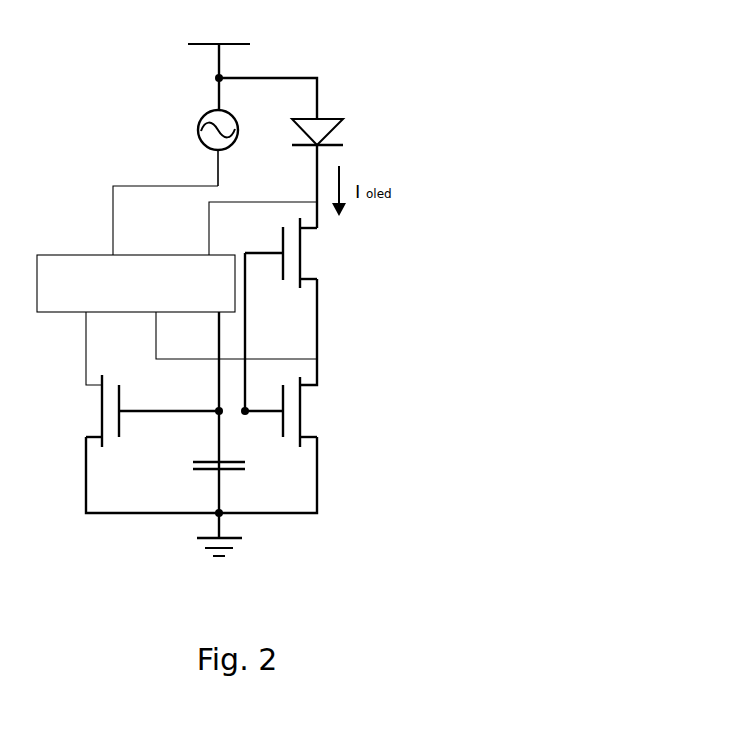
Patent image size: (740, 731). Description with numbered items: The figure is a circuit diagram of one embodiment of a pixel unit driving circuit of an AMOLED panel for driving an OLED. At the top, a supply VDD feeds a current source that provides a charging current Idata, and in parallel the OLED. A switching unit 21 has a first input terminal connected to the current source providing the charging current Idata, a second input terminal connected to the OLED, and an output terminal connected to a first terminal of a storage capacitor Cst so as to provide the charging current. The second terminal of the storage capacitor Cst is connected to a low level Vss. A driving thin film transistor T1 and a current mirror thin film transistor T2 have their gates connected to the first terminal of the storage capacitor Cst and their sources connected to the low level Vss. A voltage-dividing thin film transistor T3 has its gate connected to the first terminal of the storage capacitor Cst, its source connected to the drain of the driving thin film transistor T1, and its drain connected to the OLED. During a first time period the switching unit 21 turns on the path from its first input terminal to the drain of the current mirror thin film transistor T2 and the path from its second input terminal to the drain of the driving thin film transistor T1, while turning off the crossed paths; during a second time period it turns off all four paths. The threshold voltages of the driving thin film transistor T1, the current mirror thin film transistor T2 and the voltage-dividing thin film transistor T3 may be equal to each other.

The switching unit 21 is at (50, 255).
The driving thin film transistor T1 is at (300, 412).
The current mirror thin film transistor T2 is at (135, 411).
The voltage-dividing thin film transistor T3 is at (281, 267).
The storage capacitor Cst is at (203, 477).
The element OLED is at (353, 122).
The power supply voltage VDD is at (219, 65).
The low level Vss is at (202, 551).
The charging current Idata is at (185, 110).